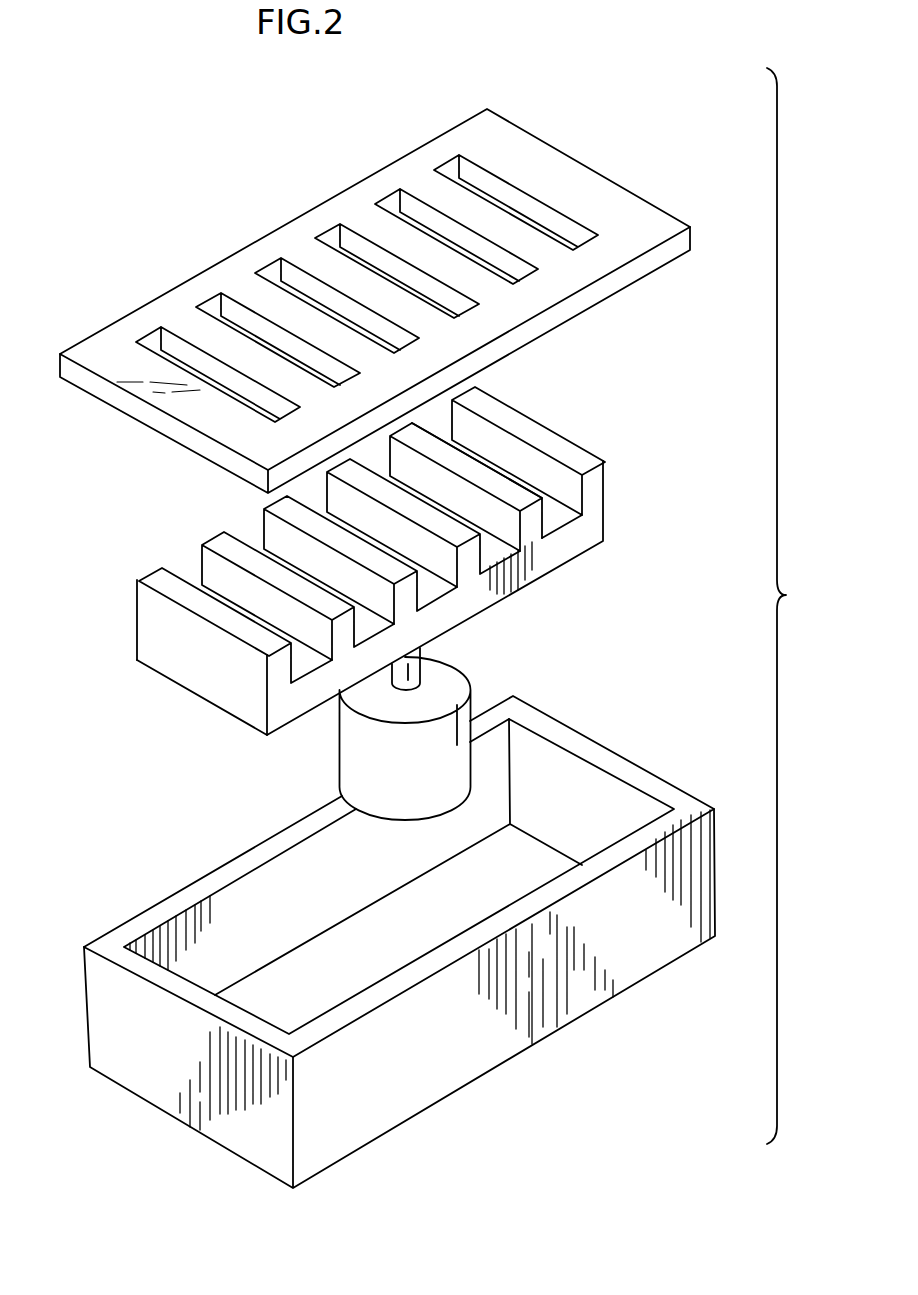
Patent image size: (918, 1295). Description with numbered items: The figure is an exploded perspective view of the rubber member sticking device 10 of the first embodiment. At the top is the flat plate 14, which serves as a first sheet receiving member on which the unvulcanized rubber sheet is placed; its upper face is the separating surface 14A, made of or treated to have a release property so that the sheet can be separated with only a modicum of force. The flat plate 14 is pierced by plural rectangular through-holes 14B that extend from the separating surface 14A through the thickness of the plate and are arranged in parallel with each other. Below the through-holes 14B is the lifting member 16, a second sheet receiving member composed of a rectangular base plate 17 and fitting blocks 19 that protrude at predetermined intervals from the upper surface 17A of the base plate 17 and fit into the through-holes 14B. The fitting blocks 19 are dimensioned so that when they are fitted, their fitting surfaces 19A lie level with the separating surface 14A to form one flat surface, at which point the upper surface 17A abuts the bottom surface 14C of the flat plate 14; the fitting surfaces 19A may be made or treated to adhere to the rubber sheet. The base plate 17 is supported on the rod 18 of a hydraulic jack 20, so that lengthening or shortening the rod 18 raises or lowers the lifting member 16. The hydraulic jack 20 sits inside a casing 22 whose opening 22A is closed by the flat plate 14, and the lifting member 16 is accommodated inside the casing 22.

The rubber member sticking device 10 is at (112, 142).
The flat plate 14 is at (494, 102).
The separating surface 14A is at (518, 148).
The through-holes 14B is at (528, 203).
The bottom surface 14C is at (640, 288).
The lifting member 16 is at (548, 422).
The base plate 17 is at (593, 528).
The upper surface 17A is at (552, 515).
The rod 18 is at (418, 662).
The fitting blocks 19 is at (579, 457).
The fitting surfaces 19A is at (500, 490).
The hydraulic jack 20 is at (443, 727).
The casing 22 is at (668, 793).
The opening 22A is at (598, 775).